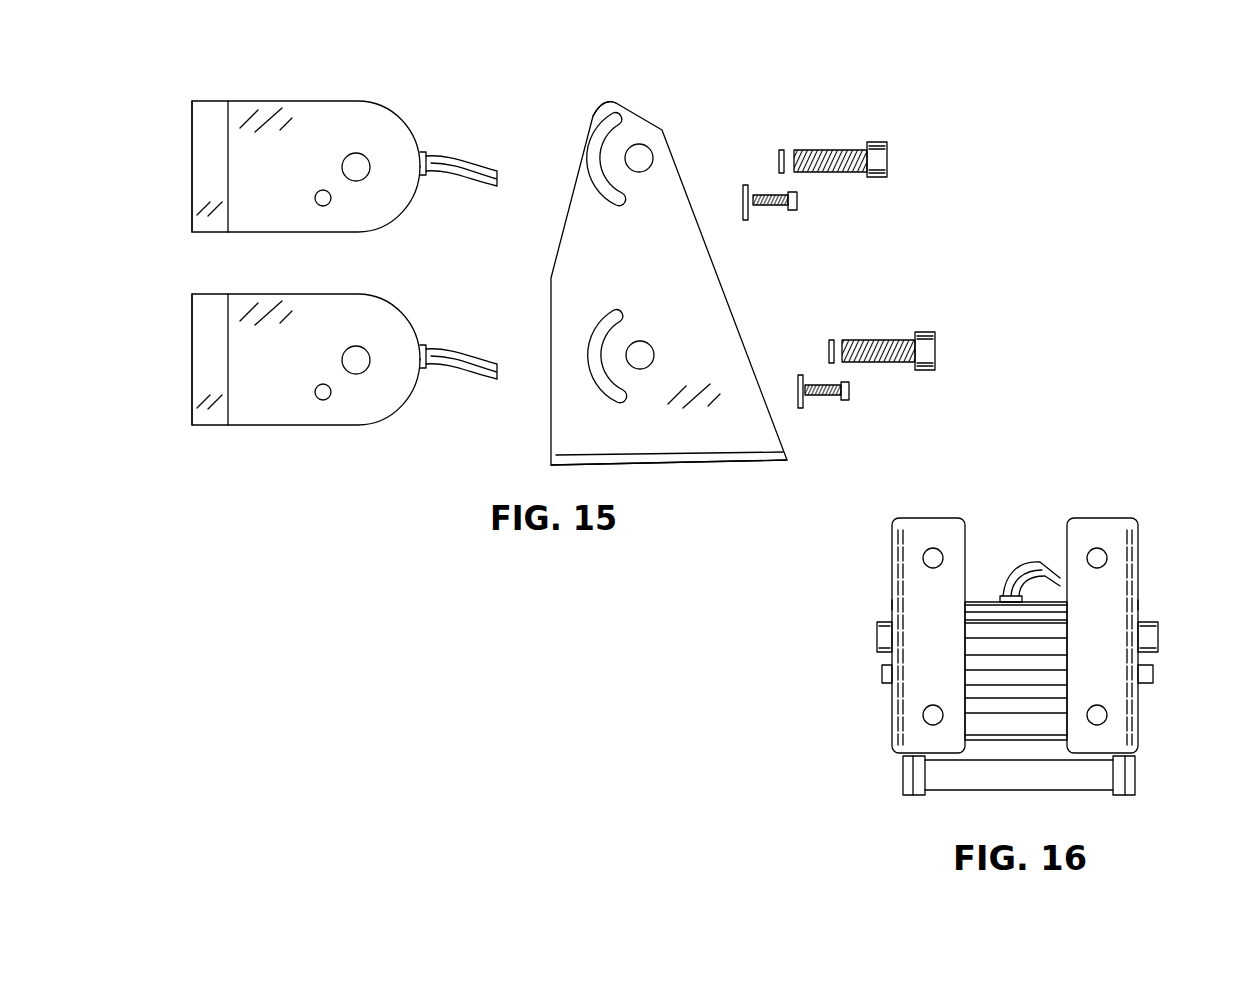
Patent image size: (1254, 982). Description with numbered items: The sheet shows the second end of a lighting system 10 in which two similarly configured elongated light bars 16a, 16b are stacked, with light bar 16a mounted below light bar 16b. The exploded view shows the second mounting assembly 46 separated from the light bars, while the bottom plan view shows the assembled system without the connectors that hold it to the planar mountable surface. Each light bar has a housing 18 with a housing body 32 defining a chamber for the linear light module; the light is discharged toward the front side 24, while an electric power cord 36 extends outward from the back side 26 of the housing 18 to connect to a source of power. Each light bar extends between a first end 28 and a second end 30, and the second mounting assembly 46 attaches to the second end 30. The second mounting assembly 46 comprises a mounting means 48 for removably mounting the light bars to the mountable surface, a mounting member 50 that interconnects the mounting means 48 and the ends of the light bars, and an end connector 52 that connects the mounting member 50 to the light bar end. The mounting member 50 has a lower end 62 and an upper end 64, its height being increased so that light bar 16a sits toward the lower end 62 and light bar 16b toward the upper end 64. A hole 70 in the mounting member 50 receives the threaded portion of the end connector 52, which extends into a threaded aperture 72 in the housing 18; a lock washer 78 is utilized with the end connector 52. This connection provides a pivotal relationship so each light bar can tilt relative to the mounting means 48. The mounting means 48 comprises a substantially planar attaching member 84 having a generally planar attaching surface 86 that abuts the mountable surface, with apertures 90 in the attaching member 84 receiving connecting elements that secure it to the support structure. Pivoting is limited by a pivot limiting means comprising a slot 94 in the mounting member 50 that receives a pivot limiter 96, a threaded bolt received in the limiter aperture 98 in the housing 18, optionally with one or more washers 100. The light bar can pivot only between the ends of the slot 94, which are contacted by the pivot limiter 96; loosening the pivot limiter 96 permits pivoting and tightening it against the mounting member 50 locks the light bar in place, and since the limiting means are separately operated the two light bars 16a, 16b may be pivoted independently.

In FIG. 16, the lighting system 10 is at (1056, 478).
In FIG. 16, the light bar 16a is at (995, 626).
In FIG. 15, the light bar 16b is at (414, 128).
In FIG. 15, the housing 18 is at (307, 120).
In FIG. 15, the front side 24 is at (192, 98).
In FIG. 15, the back side 26 is at (418, 216).
In FIG. 16, the first end 28 is at (903, 800).
In FIG. 16, the second end 30 is at (1133, 800).
In FIG. 15, the housing body 32 is at (234, 110).
In FIG. 15, the electric power cord 36 is at (460, 168).
In FIG. 16, the electric power cord 36 is at (1022, 572).
In FIG. 16, the second mounting assembly 46 is at (1152, 607).
In FIG. 16, the mounting means 48 is at (943, 515).
In FIG. 15, the mounting member 50 is at (716, 280).
In FIG. 16, the mounting member 50 is at (1109, 515).
In FIG. 15, the end connector 52 is at (877, 158).
In FIG. 16, the end connector 52 is at (877, 640).
In FIG. 15, the lower end 62 is at (797, 460).
In FIG. 15, the upper end 64 is at (592, 105).
In FIG. 15, the hole 70 is at (640, 155).
In FIG. 15, the threaded aperture 72 is at (355, 160).
In FIG. 15, the lock washer 78 is at (776, 160).
In FIG. 16, the attaching member 84 is at (905, 560).
In FIG. 16, the attaching surface 86 is at (920, 600).
In FIG. 16, the apertures 90 is at (930, 718).
In FIG. 15, the slot 94 is at (598, 160).
In FIG. 15, the pivot limiter 96 is at (793, 199).
In FIG. 16, the pivot limiter 96 is at (882, 675).
In FIG. 15, the limiter aperture 98 is at (323, 206).
In FIG. 15, the washers 100 is at (748, 215).